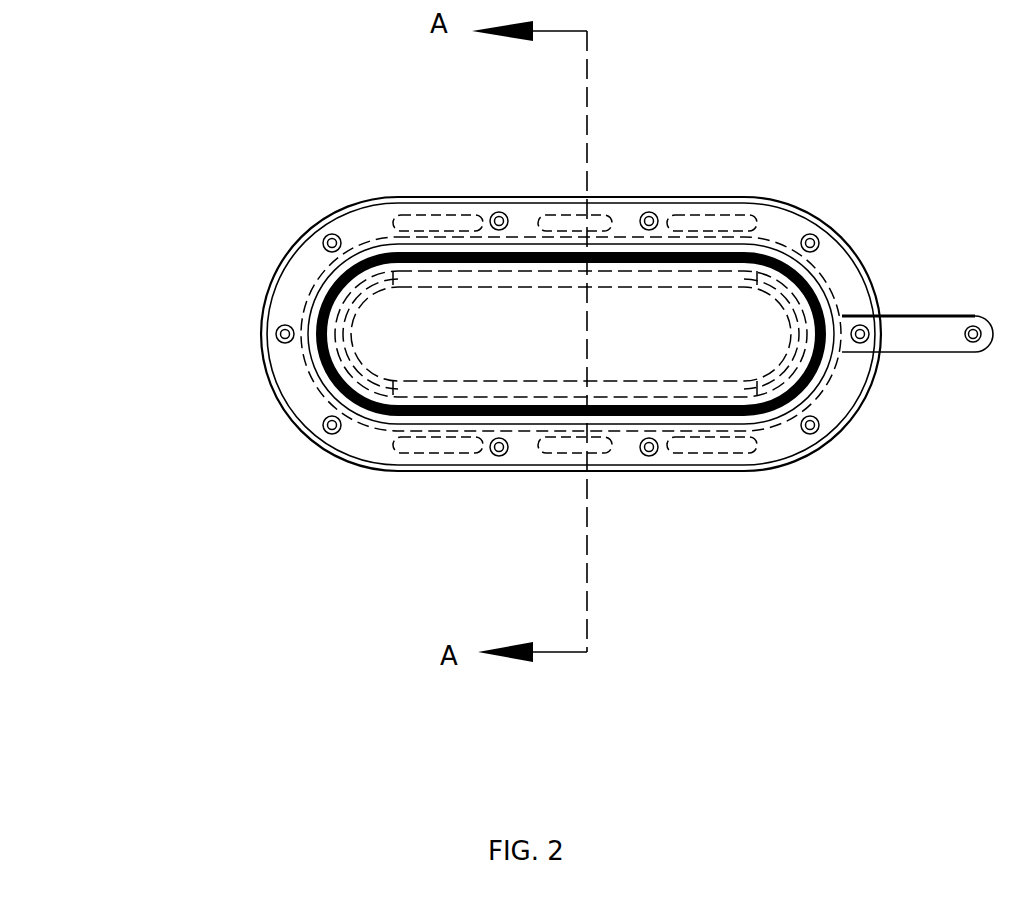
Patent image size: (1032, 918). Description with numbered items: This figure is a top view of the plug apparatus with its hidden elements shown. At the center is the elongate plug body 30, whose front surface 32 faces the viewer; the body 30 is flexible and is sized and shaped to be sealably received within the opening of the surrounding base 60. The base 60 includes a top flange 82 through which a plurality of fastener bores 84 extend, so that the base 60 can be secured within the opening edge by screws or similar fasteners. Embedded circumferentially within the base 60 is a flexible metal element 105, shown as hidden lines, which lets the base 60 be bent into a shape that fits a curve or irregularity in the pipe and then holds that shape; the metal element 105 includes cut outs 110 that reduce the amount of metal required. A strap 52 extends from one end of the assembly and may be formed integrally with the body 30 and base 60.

The plug body 30 is at (393, 305).
The front surface 32 is at (656, 305).
The strap 52 is at (898, 322).
The base 60 is at (303, 380).
The top flange 82 is at (298, 398).
The fastener bores 84 is at (499, 205).
The flexible metal element 105 is at (786, 232).
The cut outs 110 is at (432, 435).